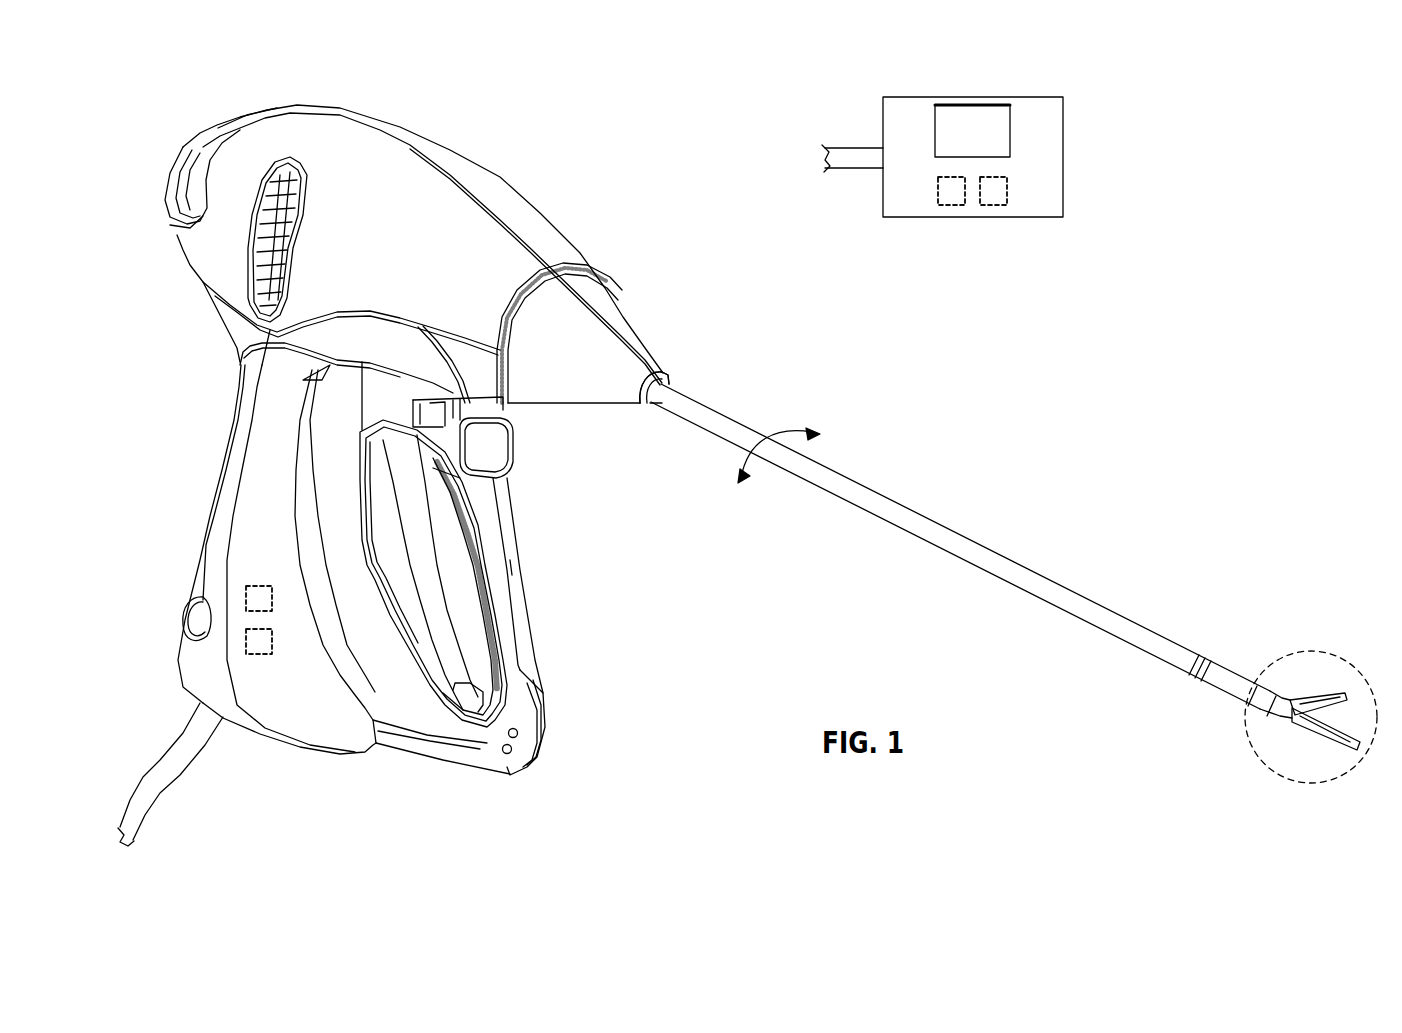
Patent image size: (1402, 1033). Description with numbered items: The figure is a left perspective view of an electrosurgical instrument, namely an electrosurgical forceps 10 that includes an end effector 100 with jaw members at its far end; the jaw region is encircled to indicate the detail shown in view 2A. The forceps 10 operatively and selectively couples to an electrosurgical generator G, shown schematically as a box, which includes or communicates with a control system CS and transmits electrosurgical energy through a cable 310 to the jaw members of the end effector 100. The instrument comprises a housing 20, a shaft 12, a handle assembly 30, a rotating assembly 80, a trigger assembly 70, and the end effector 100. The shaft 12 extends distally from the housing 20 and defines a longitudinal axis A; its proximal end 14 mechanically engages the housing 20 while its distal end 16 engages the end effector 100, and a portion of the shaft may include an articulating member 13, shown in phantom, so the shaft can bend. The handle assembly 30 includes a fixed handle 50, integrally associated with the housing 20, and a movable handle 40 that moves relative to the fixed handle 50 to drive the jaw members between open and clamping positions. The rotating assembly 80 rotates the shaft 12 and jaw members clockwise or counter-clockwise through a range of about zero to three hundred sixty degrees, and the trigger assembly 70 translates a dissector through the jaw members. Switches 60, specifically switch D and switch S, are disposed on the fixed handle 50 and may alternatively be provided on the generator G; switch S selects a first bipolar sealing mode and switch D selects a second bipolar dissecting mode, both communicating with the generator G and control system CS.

The electrosurgical forceps 10 is at (903, 392).
The shaft 12 is at (987, 554).
The articulating member 13 is at (1206, 658).
The proximal end 14 is at (680, 394).
The distal end 16 is at (1275, 696).
The housing 20 is at (486, 171).
The handle assembly 30 is at (534, 608).
The movable handle 40 is at (510, 571).
The fixed handle 50 is at (310, 754).
The switches 60 is at (255, 578).
The trigger assembly 70 is at (521, 463).
The rotating assembly 80 is at (288, 150).
The end effector 100 is at (1327, 694).
The cable 310 is at (165, 771).
The detail view reference 2A is at (1290, 781).
The longitudinal axis A- A is at (183, 150).
The switch D is at (246, 596).
The switch S is at (246, 640).
The control system CS is at (1010, 118).
The generator G is at (1063, 165).